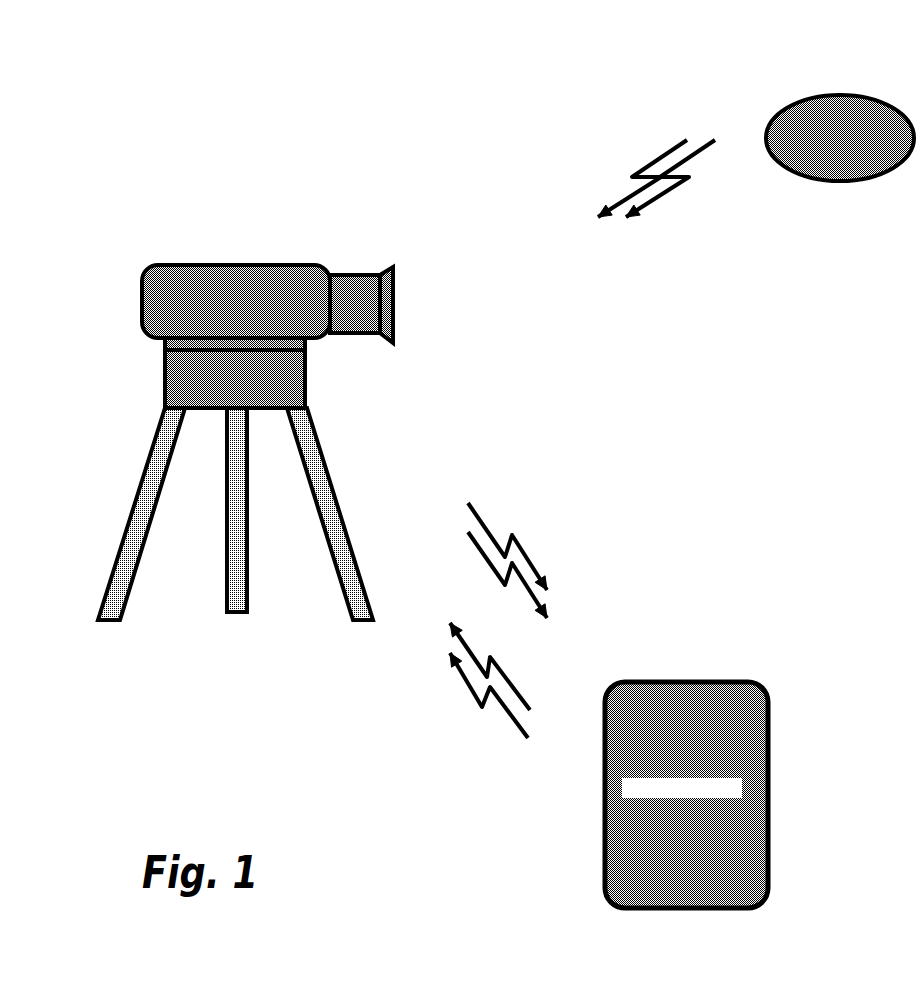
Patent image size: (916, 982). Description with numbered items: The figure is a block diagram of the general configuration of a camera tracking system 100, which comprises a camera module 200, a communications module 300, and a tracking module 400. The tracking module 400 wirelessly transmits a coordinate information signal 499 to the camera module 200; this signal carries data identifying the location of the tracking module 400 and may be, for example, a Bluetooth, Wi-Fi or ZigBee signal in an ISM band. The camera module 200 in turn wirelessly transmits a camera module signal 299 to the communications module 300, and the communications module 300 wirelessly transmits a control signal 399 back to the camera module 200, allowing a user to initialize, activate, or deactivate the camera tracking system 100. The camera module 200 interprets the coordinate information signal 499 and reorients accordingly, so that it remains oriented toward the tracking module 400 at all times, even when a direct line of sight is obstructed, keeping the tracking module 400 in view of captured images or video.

The camera tracking system 100 is at (487, 210).
The camera module 200 is at (238, 258).
The communications module 300 is at (686, 795).
The tracking module 400 is at (840, 151).
The coordinate information signal 499 is at (656, 197).
The camera module signal 299 is at (552, 537).
The control signal 399 is at (460, 682).